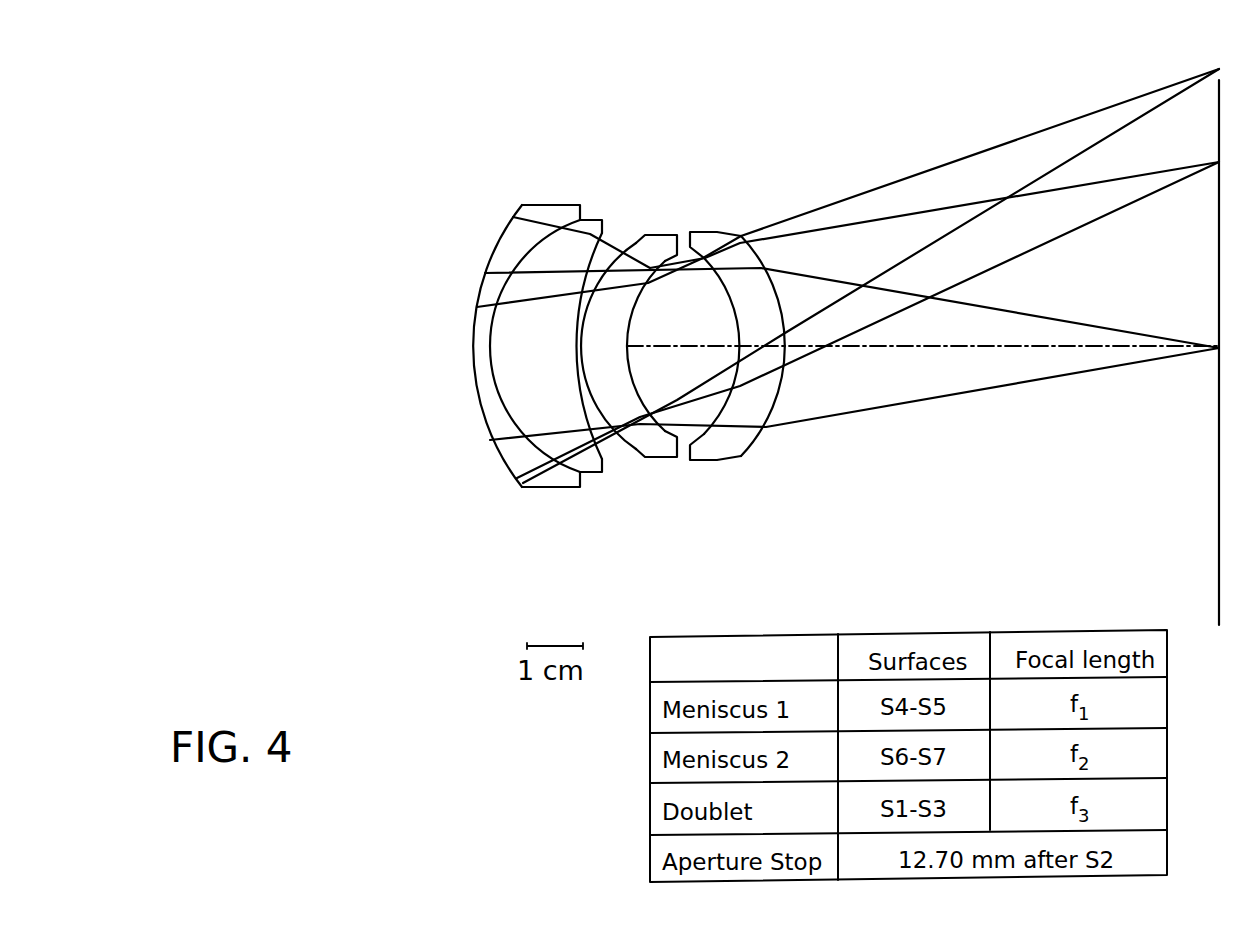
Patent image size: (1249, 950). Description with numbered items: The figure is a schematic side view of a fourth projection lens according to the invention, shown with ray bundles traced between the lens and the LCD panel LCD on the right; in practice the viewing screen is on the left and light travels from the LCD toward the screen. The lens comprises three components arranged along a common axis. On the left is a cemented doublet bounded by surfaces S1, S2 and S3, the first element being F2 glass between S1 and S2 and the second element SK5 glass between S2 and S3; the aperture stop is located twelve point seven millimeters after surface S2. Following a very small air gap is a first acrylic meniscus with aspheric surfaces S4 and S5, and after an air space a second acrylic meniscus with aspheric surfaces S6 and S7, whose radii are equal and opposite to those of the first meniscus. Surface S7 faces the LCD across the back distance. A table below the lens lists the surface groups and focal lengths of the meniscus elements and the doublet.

The first surface S1 is at (492, 250).
The second surface S2 is at (530, 247).
The third surface S3 is at (598, 250).
The fourth surface S4 is at (597, 430).
The fifth surface S5 is at (663, 435).
The sixth surface S6 is at (712, 433).
The seventh surface S7 is at (752, 430).
The LCD panel LCD is at (1219, 550).